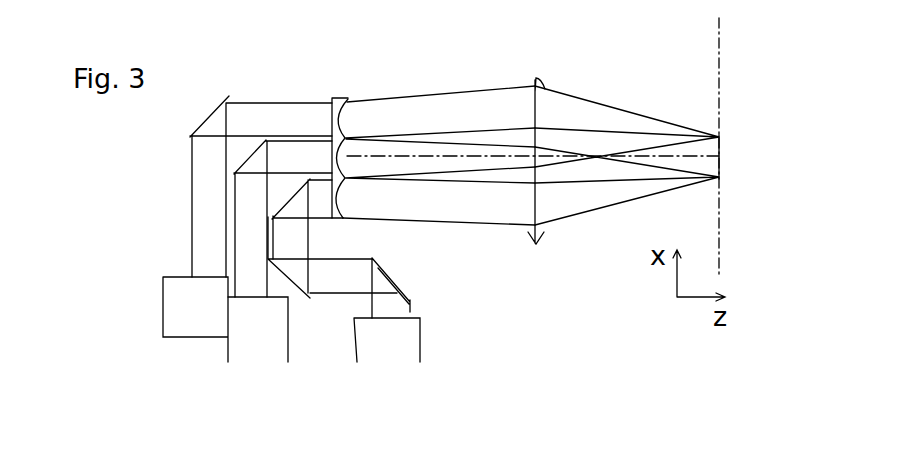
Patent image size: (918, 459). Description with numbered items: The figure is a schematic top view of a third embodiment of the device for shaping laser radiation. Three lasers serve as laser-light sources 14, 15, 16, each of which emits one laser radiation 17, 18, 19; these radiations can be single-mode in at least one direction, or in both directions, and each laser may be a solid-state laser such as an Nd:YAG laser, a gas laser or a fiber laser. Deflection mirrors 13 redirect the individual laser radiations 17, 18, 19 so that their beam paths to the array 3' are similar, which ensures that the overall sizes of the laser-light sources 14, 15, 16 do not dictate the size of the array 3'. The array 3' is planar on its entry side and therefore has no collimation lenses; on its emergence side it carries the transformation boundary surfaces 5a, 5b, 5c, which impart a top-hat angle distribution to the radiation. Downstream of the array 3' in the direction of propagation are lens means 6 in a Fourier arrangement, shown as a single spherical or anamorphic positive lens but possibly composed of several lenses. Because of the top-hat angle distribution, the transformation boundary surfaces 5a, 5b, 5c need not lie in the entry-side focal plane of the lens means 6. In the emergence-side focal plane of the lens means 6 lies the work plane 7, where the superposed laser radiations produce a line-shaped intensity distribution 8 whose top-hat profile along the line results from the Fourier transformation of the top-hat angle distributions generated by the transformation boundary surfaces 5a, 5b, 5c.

The array 3' is at (388, 122).
The transformation boundary surface 5a is at (345, 103).
The transformation boundary surface 5b is at (338, 160).
The transformation boundary surface 5c is at (343, 197).
The lens means 6 is at (536, 80).
The work plane 7 is at (719, 57).
The line-shaped intensity distribution 8 is at (719, 155).
The deflection mirrors 13 is at (215, 110).
The laser-light source 14 is at (193, 313).
The laser-light source 15 is at (266, 329).
The laser-light source 16 is at (388, 334).
The laser radiation 17 is at (212, 203).
The laser radiation 18 is at (247, 236).
The laser radiation 19 is at (393, 305).